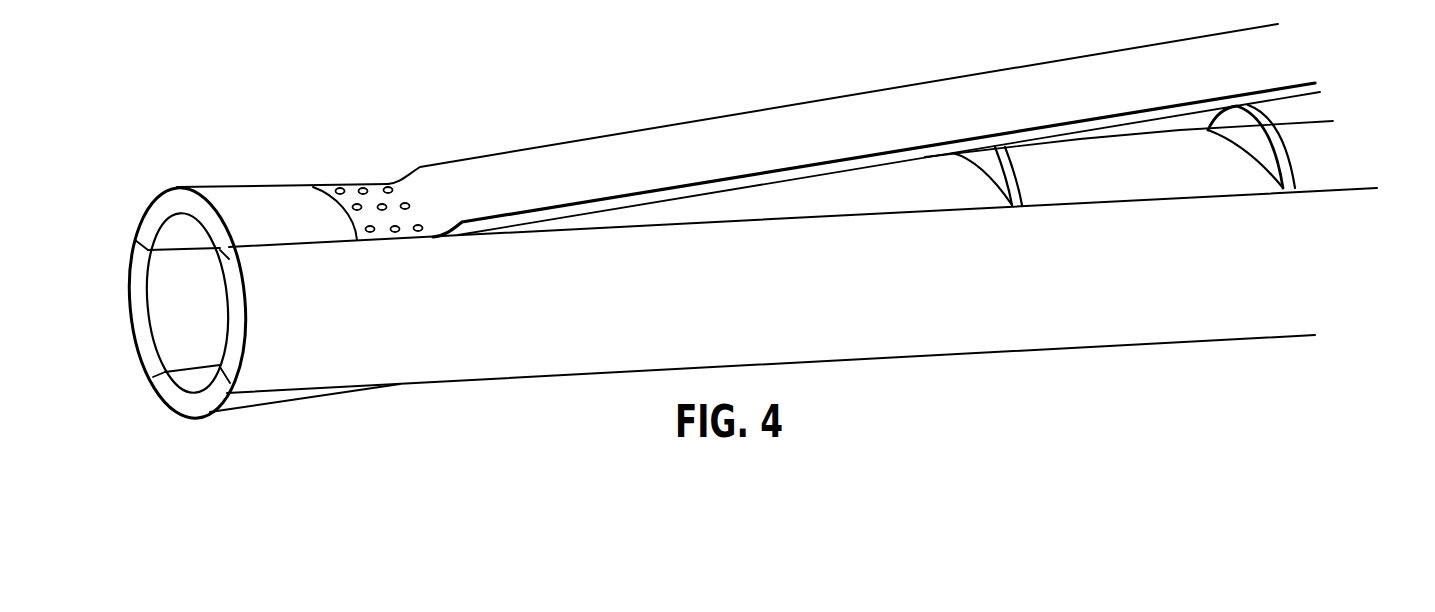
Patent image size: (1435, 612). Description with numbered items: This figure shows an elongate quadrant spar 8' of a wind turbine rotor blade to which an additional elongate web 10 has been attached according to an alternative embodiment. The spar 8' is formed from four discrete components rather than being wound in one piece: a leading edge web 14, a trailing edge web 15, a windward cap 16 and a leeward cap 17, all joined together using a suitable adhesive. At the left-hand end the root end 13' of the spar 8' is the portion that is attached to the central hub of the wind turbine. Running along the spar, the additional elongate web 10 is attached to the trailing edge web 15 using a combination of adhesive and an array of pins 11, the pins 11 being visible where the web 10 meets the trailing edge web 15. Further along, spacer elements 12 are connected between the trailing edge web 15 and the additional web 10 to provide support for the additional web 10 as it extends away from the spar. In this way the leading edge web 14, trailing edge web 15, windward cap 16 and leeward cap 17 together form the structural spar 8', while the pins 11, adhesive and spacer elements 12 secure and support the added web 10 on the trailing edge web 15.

The elongate quadrant spar 8' is at (803, 261).
The additional elongate web 10 is at (512, 162).
The pins 11 is at (388, 186).
The spacer elements 12 is at (1012, 168).
The root end 13' is at (155, 310).
The leading edge web 14 is at (170, 397).
The trailing edge web 15 is at (277, 197).
The windward cap 16 is at (457, 363).
The leeward cap 17 is at (136, 305).